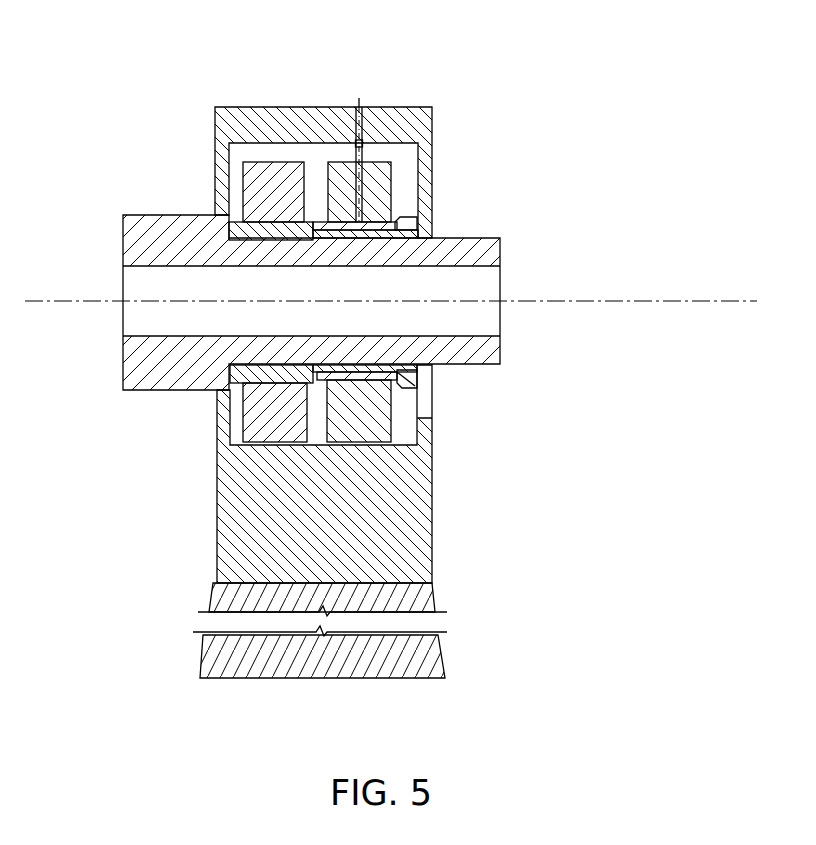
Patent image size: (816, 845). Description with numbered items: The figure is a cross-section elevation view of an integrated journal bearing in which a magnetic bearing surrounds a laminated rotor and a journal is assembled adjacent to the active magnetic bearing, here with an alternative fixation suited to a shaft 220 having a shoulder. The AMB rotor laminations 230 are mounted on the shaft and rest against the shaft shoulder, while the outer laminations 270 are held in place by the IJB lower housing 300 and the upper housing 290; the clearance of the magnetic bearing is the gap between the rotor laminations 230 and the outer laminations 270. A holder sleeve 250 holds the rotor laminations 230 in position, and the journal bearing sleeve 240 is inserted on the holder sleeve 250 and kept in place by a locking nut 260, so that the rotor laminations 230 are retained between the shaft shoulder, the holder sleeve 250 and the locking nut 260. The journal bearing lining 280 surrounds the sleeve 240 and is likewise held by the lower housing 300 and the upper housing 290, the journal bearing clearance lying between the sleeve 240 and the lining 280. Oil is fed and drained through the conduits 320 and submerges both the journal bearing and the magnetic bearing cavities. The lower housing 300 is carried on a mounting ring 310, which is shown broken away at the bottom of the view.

The shaft 220 is at (148, 362).
The AMB rotor laminations 230 is at (215, 147).
The journal bearing sleeve 240 is at (382, 227).
The holder sleeve 250 is at (371, 178).
The locking nut 260 is at (406, 223).
The outer laminations 270 is at (269, 189).
The journal bearing lining 280 is at (432, 107).
The upper housing 290 is at (252, 127).
The IJB lower housing 300 is at (265, 517).
The mounting ring 310 is at (379, 602).
The conduits 320 is at (358, 143).